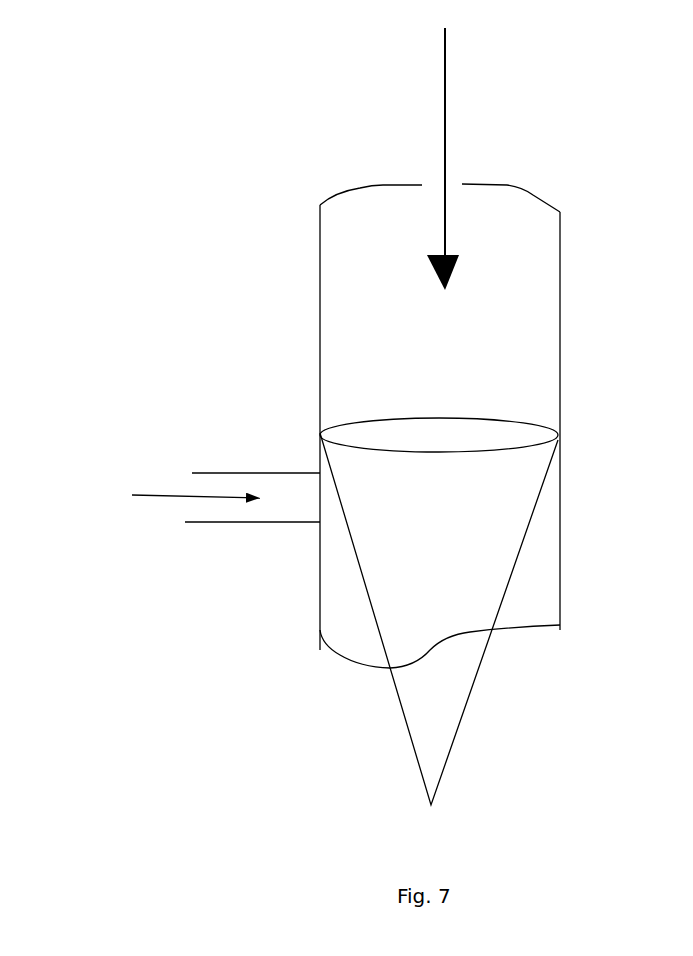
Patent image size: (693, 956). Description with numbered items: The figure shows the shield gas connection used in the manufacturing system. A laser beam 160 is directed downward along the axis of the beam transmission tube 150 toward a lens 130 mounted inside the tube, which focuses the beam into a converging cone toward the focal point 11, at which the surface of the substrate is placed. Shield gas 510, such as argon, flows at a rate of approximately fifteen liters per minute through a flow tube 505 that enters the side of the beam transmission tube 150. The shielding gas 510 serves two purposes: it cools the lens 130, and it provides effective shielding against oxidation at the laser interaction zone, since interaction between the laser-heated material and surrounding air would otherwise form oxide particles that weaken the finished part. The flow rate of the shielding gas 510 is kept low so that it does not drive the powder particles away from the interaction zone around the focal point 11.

The conical drain / cone 11 is at (439, 637).
The lens 130 is at (558, 442).
The beam transmission tube 150 is at (572, 376).
The laser beam 160 is at (445, 70).
The flow tube 505 is at (226, 465).
The shield gas 510 is at (175, 490).